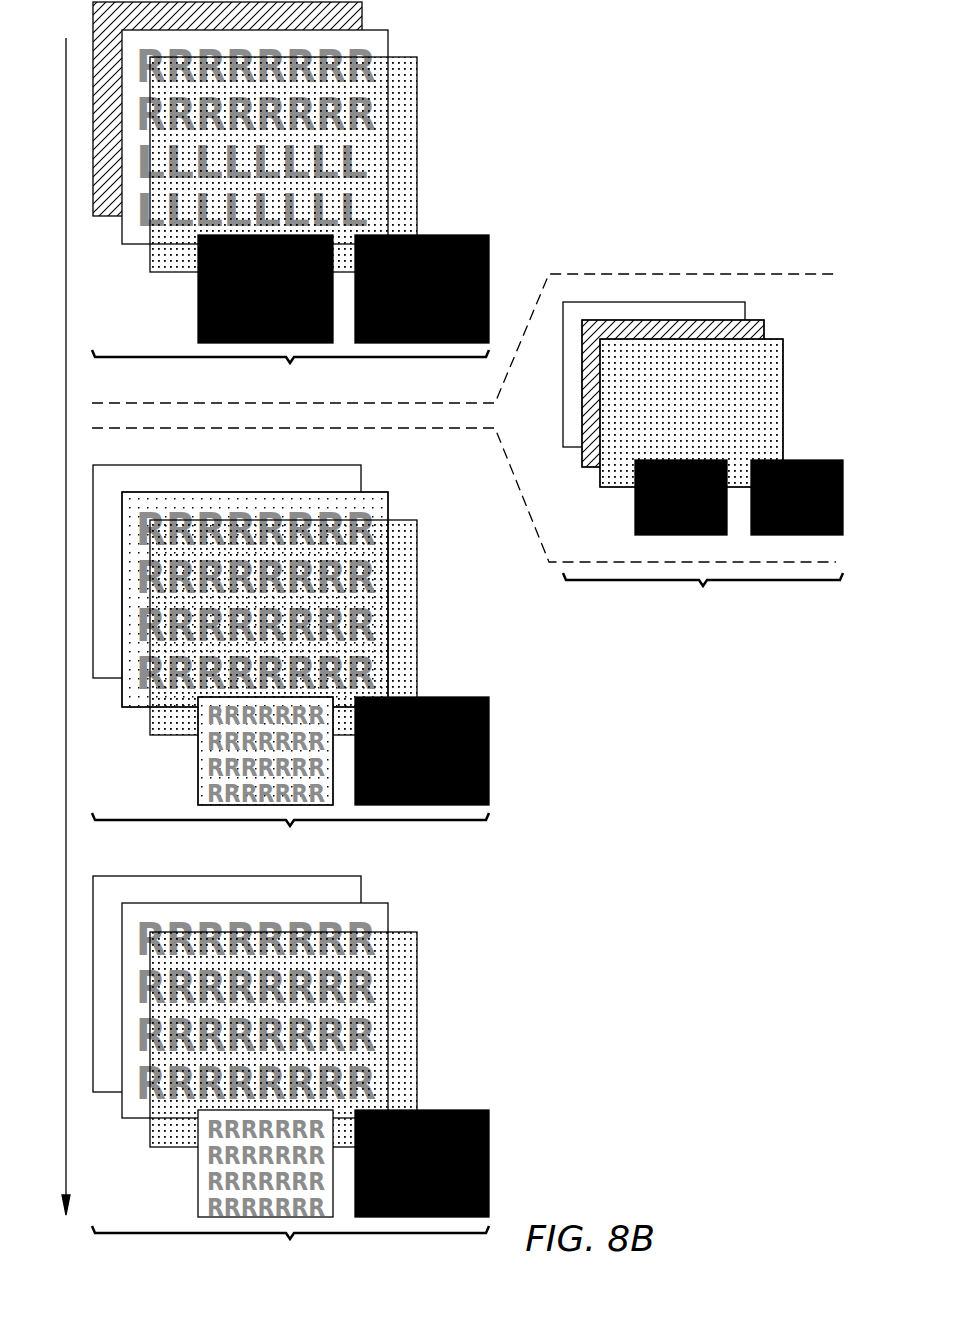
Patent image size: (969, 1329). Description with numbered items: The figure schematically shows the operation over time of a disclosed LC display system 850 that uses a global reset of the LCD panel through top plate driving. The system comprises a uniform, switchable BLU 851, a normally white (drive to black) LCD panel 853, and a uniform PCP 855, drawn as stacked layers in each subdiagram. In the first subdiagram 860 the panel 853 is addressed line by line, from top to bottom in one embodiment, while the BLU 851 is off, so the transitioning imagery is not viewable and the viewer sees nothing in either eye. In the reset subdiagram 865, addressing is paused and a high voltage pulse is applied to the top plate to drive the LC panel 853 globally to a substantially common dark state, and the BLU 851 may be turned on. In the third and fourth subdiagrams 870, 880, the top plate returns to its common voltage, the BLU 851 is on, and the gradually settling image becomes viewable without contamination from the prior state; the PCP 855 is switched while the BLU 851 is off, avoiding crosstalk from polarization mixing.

The LC display system 850 is at (606, 73).
The switchable BLU 851 is at (104, 218).
The LCD panel 853 is at (388, 41).
The PCP 855 is at (417, 141).
The first subdiagram (addressing period) 860 is at (290, 373).
The reset subdiagram 865 is at (703, 596).
The third subdiagram 870 is at (290, 836).
The fourth subdiagram 880 is at (290, 1249).